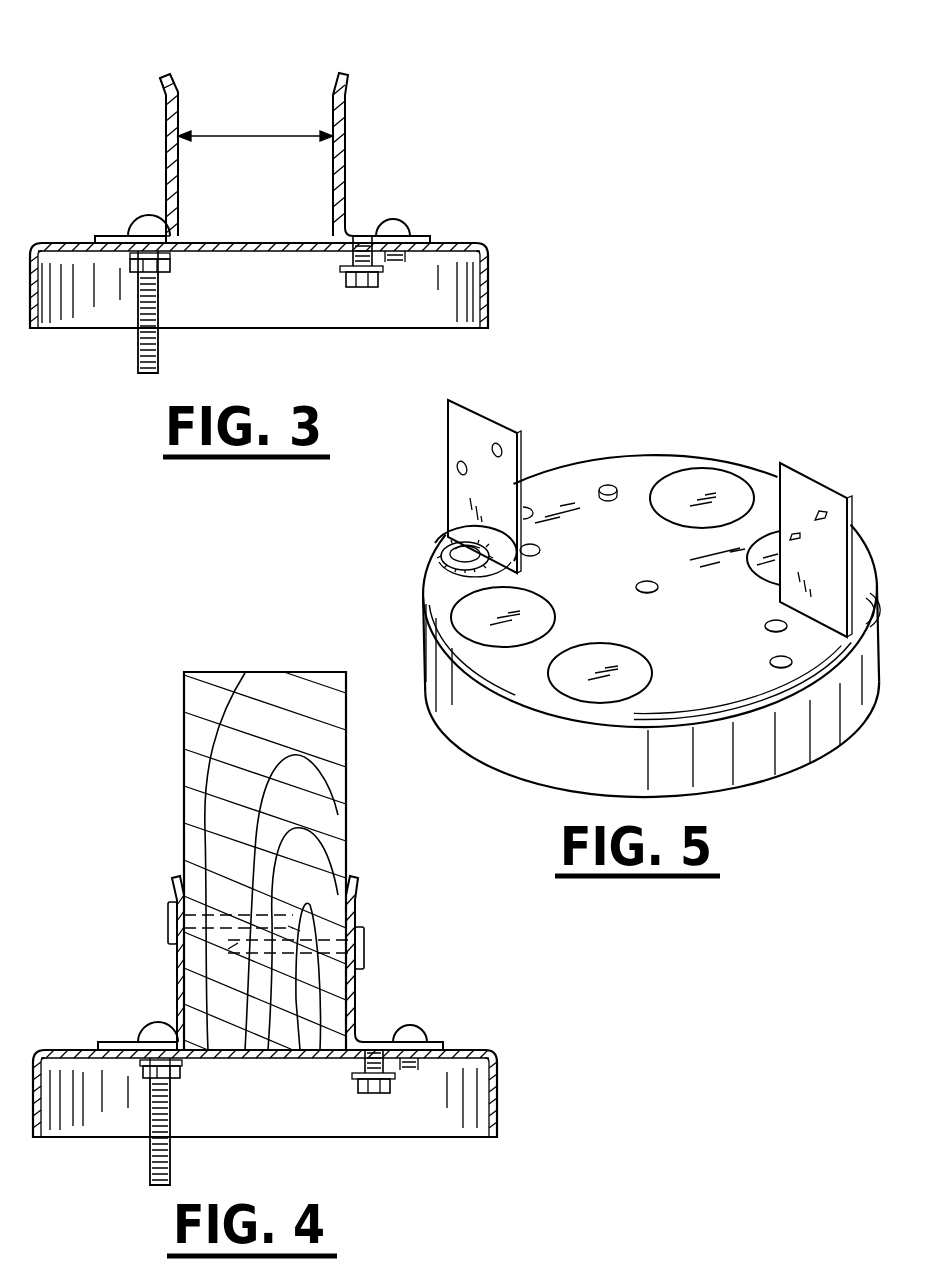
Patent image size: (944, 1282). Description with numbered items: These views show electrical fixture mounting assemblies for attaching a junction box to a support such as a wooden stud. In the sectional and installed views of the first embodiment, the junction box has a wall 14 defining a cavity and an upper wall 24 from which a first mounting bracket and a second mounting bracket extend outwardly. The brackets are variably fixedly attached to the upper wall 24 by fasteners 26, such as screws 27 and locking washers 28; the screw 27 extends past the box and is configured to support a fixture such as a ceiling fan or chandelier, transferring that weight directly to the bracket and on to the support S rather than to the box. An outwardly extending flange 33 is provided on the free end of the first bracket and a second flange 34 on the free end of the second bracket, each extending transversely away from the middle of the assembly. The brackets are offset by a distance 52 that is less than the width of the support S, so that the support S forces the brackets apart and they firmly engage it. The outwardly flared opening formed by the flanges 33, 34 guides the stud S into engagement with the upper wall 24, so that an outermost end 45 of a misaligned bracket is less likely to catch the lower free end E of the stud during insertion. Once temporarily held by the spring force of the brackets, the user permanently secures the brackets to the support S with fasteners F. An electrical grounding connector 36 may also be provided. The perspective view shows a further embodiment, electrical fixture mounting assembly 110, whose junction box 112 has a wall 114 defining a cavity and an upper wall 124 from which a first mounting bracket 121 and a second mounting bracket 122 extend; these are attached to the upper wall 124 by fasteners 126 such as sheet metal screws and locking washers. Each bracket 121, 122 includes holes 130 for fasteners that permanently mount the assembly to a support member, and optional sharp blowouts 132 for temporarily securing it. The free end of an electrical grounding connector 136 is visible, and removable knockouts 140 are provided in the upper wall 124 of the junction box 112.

In FIG. 3, the wall 14 is at (490, 278).
In FIG. 3, the upper wall 24 is at (450, 240).
In FIG. 3, the fasteners 26 is at (134, 218).
In FIG. 3, the screw 27 is at (140, 352).
In FIG. 4, the screw 27 is at (150, 1158).
In FIG. 3, the locking washer 28 is at (172, 264).
In FIG. 3, the flange 33 is at (125, 129).
In FIG. 3, the second flange 34 is at (346, 78).
In FIG. 3, the electrical grounding connector 36 is at (361, 288).
In FIG. 4, the electrical grounding connector 36 is at (386, 1094).
In FIG. 3, the outermost end 45 is at (162, 78).
In FIG. 3, the distance 52 is at (250, 136).
In FIG. 4, the support S is at (184, 768).
In FIG. 4, the fasteners F is at (167, 922).
In FIG. 4, the lower free end E is at (290, 1052).
In FIG. 5, the electrical fixture mounting assembly 110 is at (600, 597).
In FIG. 5, the junction box 112 is at (642, 626).
In FIG. 5, the wall 114 is at (843, 727).
In FIG. 5, the first mounting bracket 121 is at (448, 486).
In FIG. 5, the second mounting bracket 122 is at (802, 519).
In FIG. 5, the upper wall 124 is at (644, 557).
In FIG. 5, the fasteners 126 is at (447, 551).
In FIG. 5, the holes 130 is at (458, 466).
In FIG. 5, the blowouts 132 is at (824, 512).
In FIG. 5, the electrical grounding connector 136 is at (605, 485).
In FIG. 5, the knockouts 140 is at (696, 492).